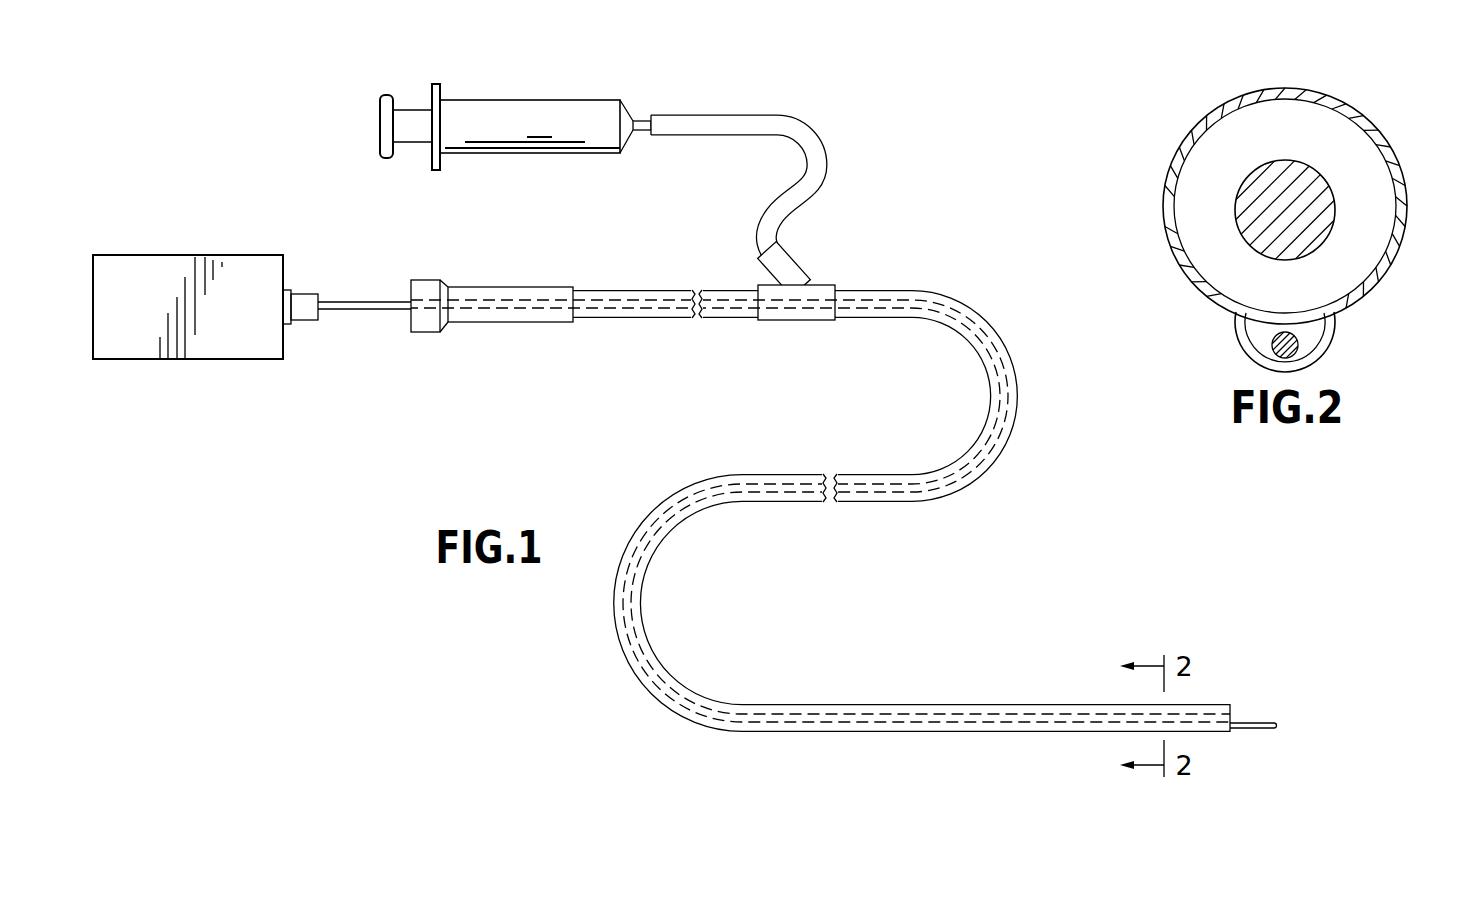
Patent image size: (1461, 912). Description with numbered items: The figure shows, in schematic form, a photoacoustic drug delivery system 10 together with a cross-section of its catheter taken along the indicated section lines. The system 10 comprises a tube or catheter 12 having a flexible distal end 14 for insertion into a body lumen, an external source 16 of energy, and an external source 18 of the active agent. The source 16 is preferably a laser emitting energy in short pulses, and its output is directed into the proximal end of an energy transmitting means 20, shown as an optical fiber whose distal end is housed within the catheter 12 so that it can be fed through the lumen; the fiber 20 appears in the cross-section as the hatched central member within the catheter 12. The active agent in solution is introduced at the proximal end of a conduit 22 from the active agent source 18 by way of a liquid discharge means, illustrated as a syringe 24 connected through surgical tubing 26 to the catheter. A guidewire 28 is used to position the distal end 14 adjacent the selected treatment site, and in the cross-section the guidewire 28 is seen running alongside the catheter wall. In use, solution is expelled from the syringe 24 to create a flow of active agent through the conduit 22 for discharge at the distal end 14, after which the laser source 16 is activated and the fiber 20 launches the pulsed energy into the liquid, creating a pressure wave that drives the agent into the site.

In FIG. 1, the drug delivery system 10 is at (543, 411).
In FIG. 1, the catheter 12 is at (845, 546).
In FIG. 2, the catheter 12 is at (1282, 219).
In FIG. 1, the flexible distal end 14 is at (1231, 704).
In FIG. 1, the external source of energy 16 is at (163, 255).
In FIG. 1, the external source of the active agent 18 is at (638, 57).
In FIG. 1, the energy transmitting means 20 is at (960, 732).
In FIG. 2, the energy transmitting means 20 is at (1236, 212).
In FIG. 1, the conduit 22 is at (830, 704).
In FIG. 2, the conduit 22 is at (1355, 134).
In FIG. 1, the syringe 24 is at (517, 100).
In FIG. 1, the surgical tubing 26 is at (828, 160).
In FIG. 1, the guidewire 28 is at (1262, 729).
In FIG. 2, the guidewire 28 is at (1298, 345).